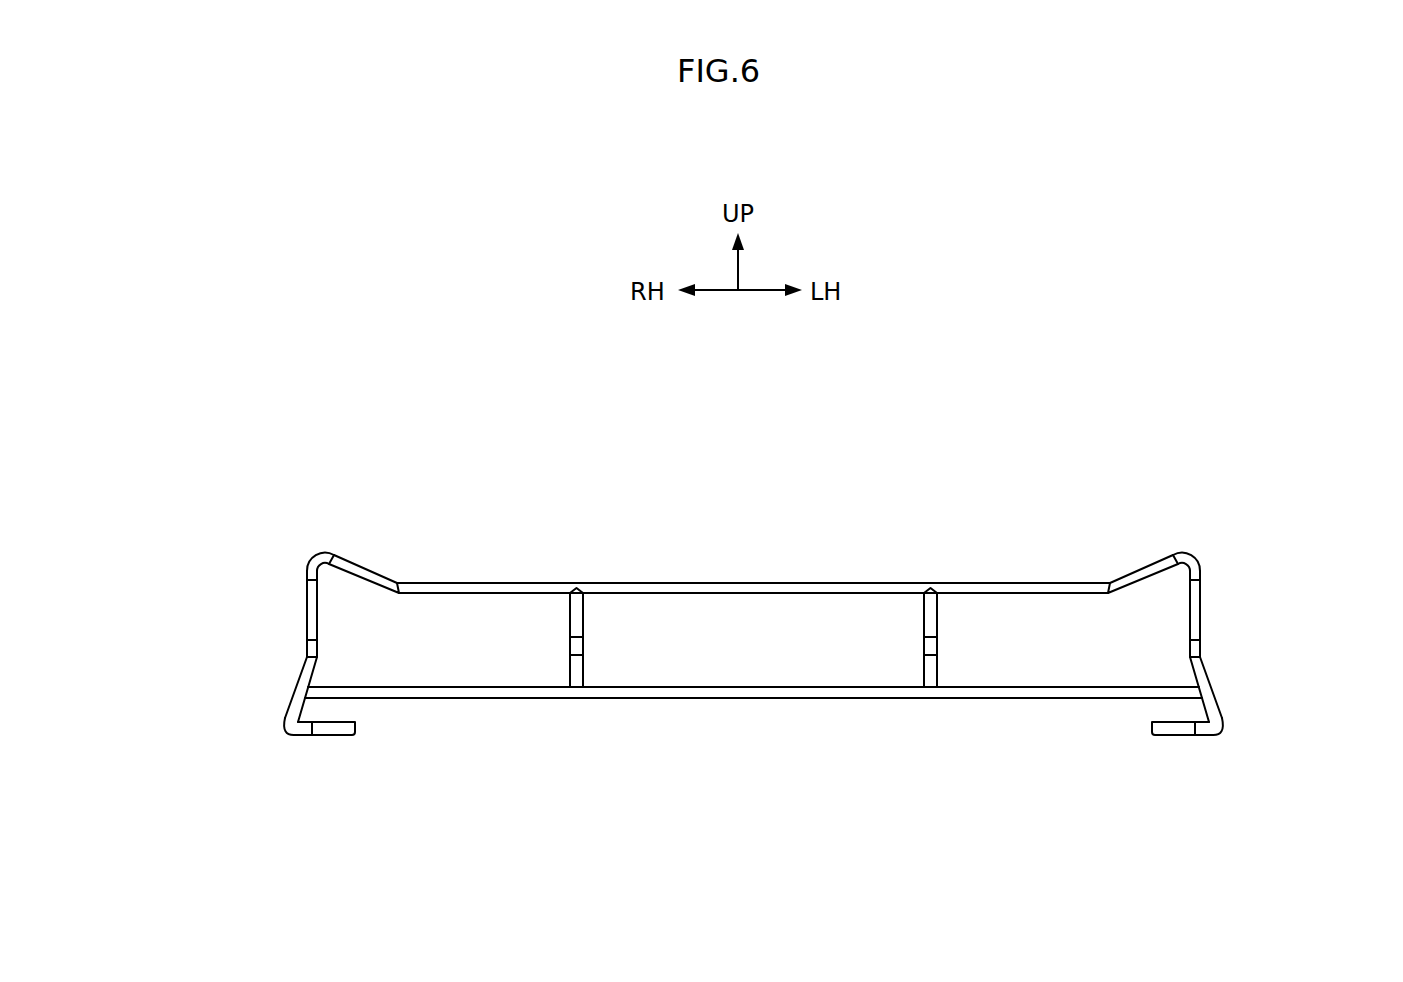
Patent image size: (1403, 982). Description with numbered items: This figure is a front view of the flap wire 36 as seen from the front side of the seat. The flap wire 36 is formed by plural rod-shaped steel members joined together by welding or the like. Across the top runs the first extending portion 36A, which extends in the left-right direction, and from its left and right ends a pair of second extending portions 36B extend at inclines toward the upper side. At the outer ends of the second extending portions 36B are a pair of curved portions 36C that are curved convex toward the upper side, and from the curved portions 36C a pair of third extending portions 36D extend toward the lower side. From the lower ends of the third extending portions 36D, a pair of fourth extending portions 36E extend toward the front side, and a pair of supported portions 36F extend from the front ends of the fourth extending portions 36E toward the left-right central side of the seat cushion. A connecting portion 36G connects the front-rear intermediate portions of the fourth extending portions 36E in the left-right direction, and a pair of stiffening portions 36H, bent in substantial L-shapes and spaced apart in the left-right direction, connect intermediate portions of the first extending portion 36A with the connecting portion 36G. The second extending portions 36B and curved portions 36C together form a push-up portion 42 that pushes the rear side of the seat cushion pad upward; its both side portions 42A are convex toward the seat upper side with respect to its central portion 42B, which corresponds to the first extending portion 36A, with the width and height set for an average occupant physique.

The flap wire 36 is at (1050, 338).
The first extending portion 36A is at (748, 583).
The second extending portions 36B is at (378, 568).
The curved portions 36C is at (315, 553).
The third extending portions 36D is at (303, 612).
The fourth extending portions 36E is at (298, 670).
The supported portions 36F is at (342, 732).
The connecting portion 36G is at (710, 698).
The stiffening portions 36H is at (583, 650).
The push-up portion 42 is at (620, 580).
The both side portions 42A is at (332, 552).
The central portion 42B is at (862, 583).